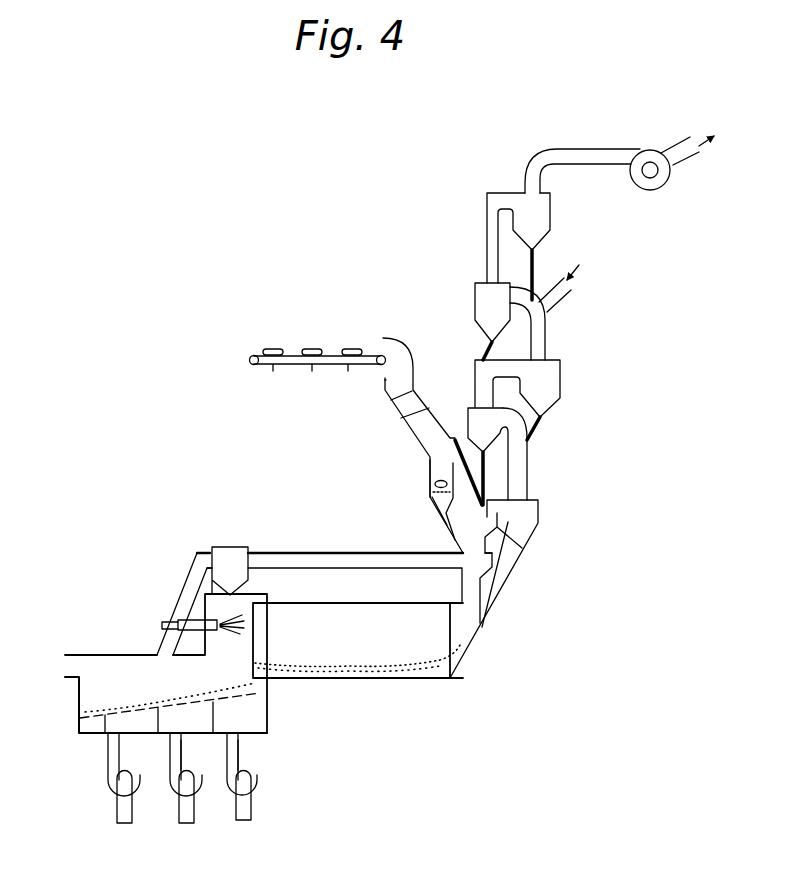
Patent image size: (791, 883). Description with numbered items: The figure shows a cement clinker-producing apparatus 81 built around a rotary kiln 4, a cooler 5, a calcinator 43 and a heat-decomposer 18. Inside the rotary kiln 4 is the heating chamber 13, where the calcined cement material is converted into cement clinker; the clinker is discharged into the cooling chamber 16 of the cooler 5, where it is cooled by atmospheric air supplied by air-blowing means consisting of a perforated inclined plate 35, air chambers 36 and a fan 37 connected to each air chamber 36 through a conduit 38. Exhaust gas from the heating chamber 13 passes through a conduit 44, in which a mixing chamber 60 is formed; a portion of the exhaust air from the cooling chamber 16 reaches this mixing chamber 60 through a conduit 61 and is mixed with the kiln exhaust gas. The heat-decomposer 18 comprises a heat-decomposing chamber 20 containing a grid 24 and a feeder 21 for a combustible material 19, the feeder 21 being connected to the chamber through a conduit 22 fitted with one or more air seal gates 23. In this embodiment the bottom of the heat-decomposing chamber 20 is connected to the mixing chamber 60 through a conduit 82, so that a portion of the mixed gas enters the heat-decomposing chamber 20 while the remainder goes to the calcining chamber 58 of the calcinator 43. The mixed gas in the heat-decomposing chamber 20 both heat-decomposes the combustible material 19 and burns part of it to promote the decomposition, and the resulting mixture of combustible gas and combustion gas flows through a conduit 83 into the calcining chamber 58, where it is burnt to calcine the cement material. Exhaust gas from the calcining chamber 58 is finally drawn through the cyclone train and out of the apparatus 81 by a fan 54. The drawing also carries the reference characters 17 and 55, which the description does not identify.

The rotary kiln 4 is at (331, 715).
The cooler 5 is at (112, 620).
The heating chamber 13 is at (380, 647).
The cooling chamber 16 is at (93, 655).
The burner 17 is at (168, 620).
The heat-decomposer 18 is at (356, 462).
The combustible material 19 is at (312, 348).
The heat-decomposing chamber 20 is at (433, 465).
The feeder 21 is at (255, 355).
The conduit 22 is at (390, 400).
The air seal gates 23 is at (402, 380).
The grid 24 is at (433, 498).
The inclined plate 35 is at (103, 715).
The air chambers 36 is at (170, 727).
The fan 37 is at (174, 792).
The conduit 38 is at (182, 757).
The calcinator 43 is at (502, 490).
The conduit 44 is at (498, 600).
The fan 54 is at (670, 184).
The air inlet 55 is at (566, 297).
The calcining chamber 58 is at (497, 527).
The mixing chamber 60 is at (490, 560).
The conduit 61 is at (328, 553).
The apparatus 81 is at (239, 166).
The conduit 82 is at (447, 530).
The conduit 83 is at (490, 476).